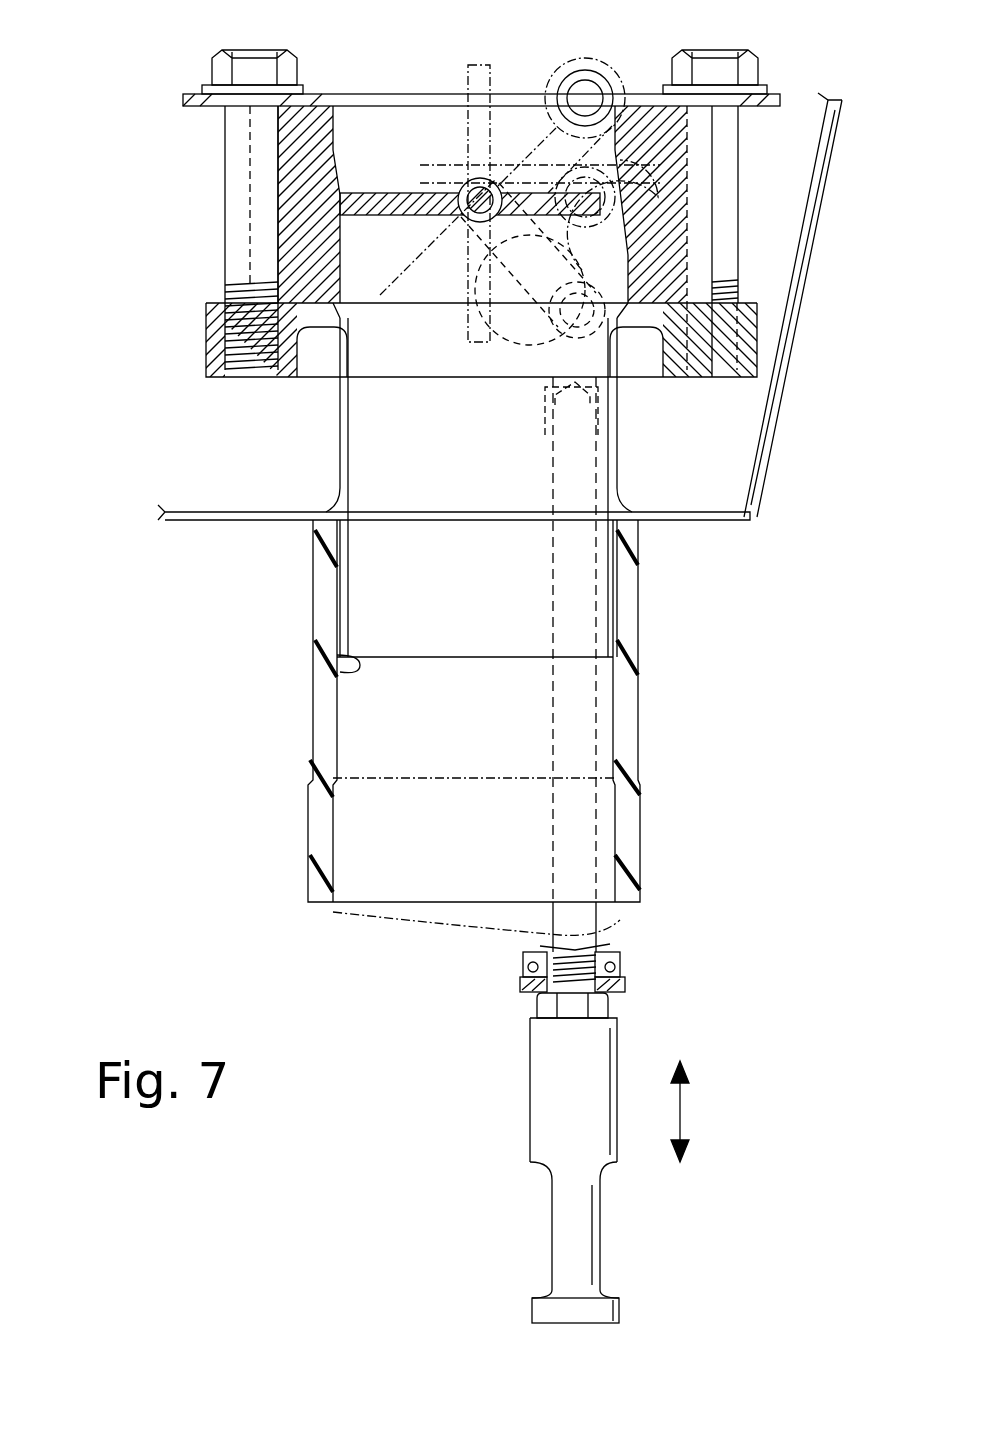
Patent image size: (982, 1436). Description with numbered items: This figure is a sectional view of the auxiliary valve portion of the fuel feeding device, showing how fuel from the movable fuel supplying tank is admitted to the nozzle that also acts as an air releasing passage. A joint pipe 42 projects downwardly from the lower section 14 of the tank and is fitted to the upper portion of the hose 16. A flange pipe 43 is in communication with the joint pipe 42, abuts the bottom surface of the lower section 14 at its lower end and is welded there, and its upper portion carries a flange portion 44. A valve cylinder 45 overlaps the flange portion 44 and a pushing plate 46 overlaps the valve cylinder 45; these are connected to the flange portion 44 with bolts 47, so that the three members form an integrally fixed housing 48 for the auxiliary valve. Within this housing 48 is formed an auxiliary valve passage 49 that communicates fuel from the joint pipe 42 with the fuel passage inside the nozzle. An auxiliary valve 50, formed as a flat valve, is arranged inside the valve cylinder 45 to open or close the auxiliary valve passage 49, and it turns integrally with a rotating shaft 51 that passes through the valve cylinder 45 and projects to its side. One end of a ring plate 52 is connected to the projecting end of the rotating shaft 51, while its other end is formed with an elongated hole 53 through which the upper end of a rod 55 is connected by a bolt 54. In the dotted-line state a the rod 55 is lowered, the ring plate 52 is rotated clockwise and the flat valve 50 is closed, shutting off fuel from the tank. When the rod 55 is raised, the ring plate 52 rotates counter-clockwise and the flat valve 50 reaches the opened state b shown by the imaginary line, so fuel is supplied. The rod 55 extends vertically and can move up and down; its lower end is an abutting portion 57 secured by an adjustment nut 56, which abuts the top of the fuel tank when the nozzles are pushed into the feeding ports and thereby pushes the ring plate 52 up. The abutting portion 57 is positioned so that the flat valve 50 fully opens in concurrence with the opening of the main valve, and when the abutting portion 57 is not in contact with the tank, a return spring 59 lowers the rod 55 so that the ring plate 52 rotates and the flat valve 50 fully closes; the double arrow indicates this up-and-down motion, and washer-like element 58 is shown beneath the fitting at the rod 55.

The lower section 14 is at (208, 512).
The hose 16 is at (313, 600).
The joint pipe 42 is at (340, 672).
The flange pipe 43 is at (340, 446).
The flange portion 44 is at (206, 340).
The valve cylinder 45 is at (258, 160).
The pushing plate 46 is at (190, 96).
The bolts 47 is at (220, 50).
The housing 48 is at (318, 58).
The auxiliary valve passage 49 is at (358, 123).
The auxiliary valve 50 is at (386, 218).
The rotating shaft 51 is at (462, 185).
The ring plate 52 is at (478, 310).
The elongated hole 53 is at (545, 260).
The bolt 54 is at (522, 380).
The rod 55 is at (590, 702).
The adjustment nut 56 is at (612, 1006).
The abutting portion 57 is at (597, 1254).
The washer 58 is at (522, 988).
The return spring 59 is at (620, 957).
The fuel-closed state a is at (500, 372).
The fuel-opened state b is at (570, 72).